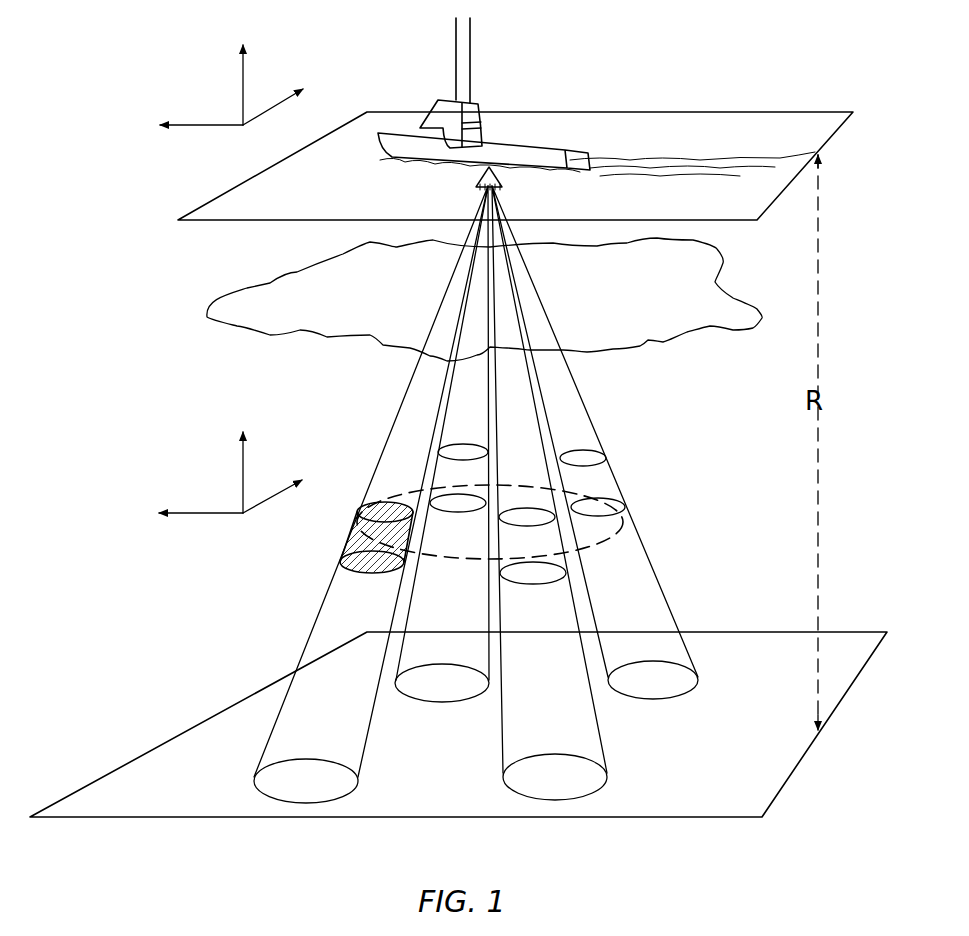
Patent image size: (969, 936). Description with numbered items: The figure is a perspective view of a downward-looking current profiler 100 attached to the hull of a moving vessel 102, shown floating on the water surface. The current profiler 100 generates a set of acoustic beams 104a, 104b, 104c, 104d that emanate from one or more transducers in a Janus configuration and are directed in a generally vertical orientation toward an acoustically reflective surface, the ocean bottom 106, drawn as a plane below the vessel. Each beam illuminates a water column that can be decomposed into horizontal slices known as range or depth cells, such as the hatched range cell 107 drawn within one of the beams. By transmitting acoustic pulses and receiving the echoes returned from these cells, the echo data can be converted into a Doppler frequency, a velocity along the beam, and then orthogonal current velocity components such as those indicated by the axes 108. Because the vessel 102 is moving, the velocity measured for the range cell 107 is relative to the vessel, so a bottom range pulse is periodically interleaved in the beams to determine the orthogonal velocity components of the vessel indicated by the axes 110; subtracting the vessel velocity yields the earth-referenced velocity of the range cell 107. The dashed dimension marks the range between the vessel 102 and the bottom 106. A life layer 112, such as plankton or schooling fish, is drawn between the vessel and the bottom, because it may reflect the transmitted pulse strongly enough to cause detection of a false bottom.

The current profiler 100 is at (493, 167).
The vessel 102 is at (480, 100).
The acoustic beam 104a is at (297, 655).
The acoustic beam 104b is at (575, 606).
The acoustic beam 104c is at (675, 617).
The acoustic beam 104d is at (410, 603).
The ocean bottom 106 is at (843, 632).
The range cell 107 is at (345, 533).
The orthogonal current velocity components 108 is at (200, 458).
The orthogonal velocity components of the vessel 110 is at (200, 68).
The life layer 112 is at (268, 283).